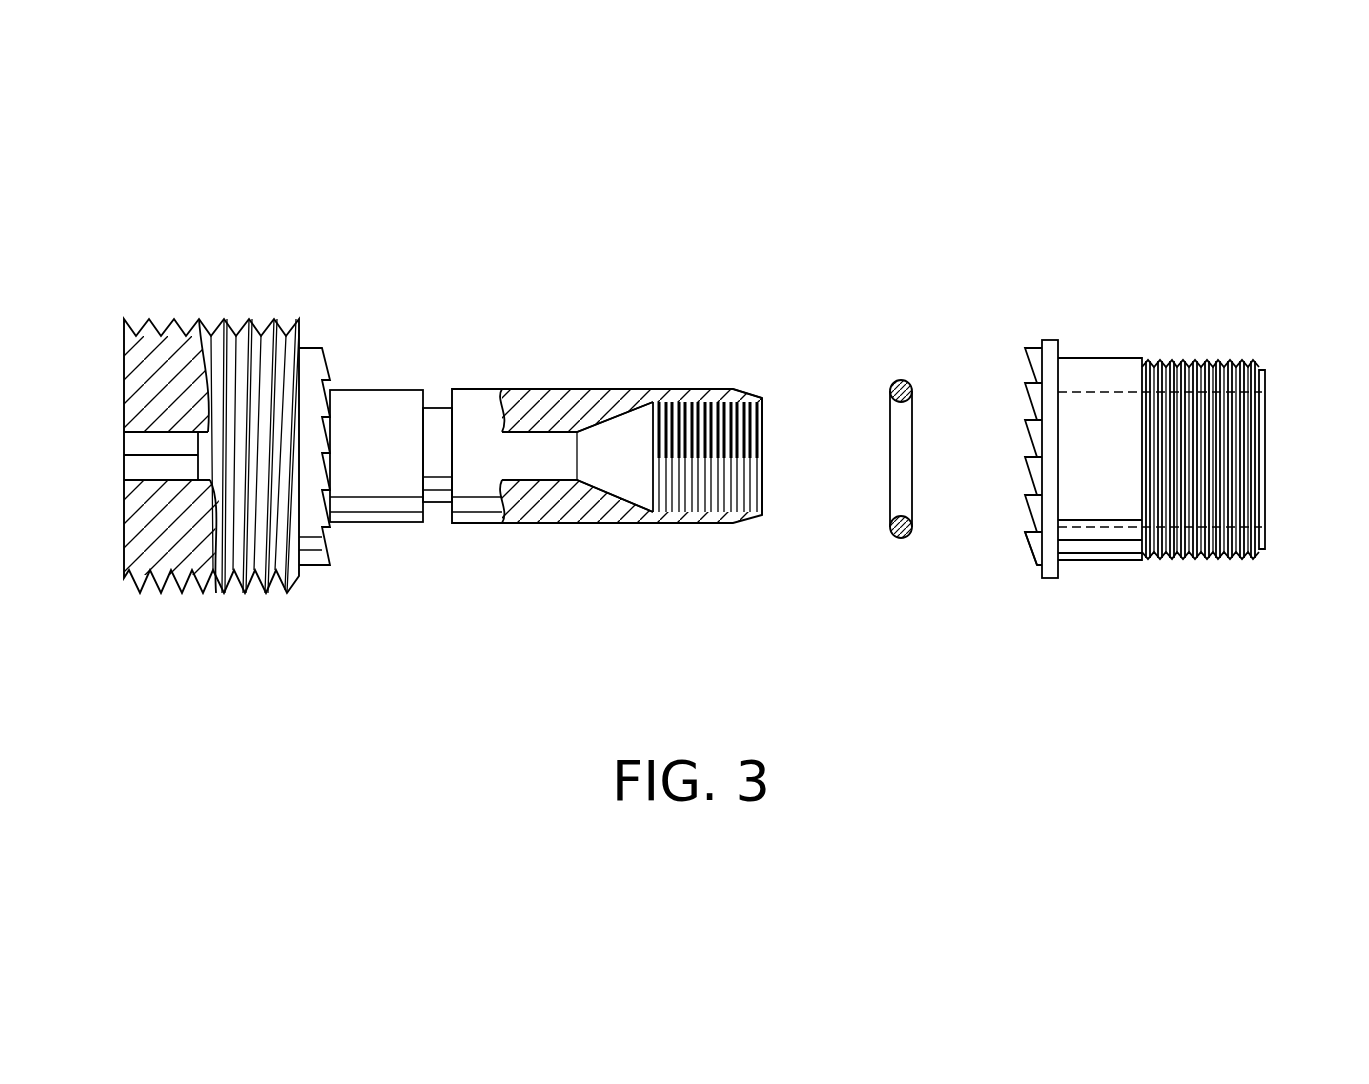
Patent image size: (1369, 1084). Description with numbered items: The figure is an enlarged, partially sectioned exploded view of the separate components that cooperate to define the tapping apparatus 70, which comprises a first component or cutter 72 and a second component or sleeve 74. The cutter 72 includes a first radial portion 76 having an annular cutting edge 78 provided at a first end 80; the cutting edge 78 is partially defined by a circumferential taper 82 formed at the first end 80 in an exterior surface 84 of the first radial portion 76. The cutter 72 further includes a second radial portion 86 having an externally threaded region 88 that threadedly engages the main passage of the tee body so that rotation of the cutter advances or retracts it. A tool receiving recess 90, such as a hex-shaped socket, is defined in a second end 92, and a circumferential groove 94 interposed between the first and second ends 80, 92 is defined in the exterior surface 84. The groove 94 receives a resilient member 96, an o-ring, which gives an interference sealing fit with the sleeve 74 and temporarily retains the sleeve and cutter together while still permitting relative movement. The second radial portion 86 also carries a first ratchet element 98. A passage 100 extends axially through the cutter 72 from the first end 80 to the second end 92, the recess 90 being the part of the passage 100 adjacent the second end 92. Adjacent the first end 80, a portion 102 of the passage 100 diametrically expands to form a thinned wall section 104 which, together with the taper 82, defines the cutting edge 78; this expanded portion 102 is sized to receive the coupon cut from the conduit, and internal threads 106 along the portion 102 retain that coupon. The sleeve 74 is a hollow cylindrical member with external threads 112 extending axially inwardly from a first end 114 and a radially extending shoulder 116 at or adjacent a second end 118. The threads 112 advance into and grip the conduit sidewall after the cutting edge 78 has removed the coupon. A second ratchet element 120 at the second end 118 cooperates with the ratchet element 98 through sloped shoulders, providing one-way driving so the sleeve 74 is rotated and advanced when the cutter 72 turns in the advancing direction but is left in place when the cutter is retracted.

The tapping apparatus 70 is at (1305, 666).
The cutter 72 is at (647, 427).
The sleeve 74 is at (1157, 453).
The first radial portion 76 is at (551, 388).
The annular cutting edge 78 is at (765, 400).
The first end 80 is at (766, 485).
The circumferential taper 82 is at (747, 395).
The exterior surface 84 is at (610, 523).
The second radial portion 86 is at (185, 427).
The externally threaded region 88 is at (226, 589).
The tool receiving recess 90 is at (140, 467).
The second end 92 is at (124, 376).
The circumferential groove 94 is at (438, 505).
The resilient member 96 is at (903, 380).
The first ratchet element 98 is at (331, 405).
The passage 100 is at (545, 467).
The diametrically expanded portion 102 is at (622, 432).
The thinned wall section 104 is at (714, 395).
The internal threads 106 is at (708, 510).
The external threads 112 is at (1220, 558).
The first end 114 is at (1265, 417).
The radially extending shoulder 116 is at (1060, 567).
The second end 118 is at (1033, 558).
The second ratchet element 120 is at (1028, 443).